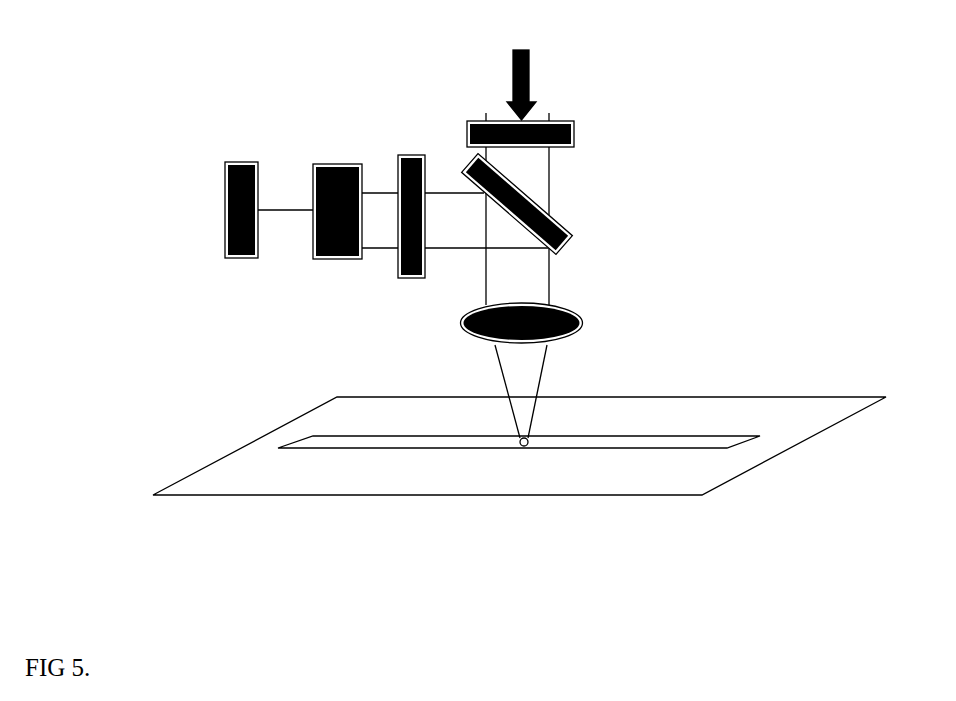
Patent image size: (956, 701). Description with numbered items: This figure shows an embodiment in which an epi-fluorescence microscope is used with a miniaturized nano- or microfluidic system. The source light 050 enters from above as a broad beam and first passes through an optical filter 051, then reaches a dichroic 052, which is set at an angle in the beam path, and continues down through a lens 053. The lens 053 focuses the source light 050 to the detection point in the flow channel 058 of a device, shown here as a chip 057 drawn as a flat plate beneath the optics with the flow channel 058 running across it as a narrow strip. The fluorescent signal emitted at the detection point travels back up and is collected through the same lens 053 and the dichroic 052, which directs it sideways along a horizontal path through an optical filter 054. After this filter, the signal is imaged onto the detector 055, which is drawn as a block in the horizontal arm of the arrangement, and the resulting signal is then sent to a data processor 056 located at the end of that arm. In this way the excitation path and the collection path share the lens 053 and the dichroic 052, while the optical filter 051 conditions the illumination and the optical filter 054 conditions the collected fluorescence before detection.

The source light 050 is at (531, 64).
The optical filter 051 is at (582, 133).
The dichroic 052 is at (565, 208).
The lens 053 is at (590, 313).
The optical filter 054 is at (412, 153).
The detector 055 is at (330, 267).
The data processor 056 is at (237, 153).
The chip 057 is at (735, 407).
The flow channel 058 is at (360, 438).